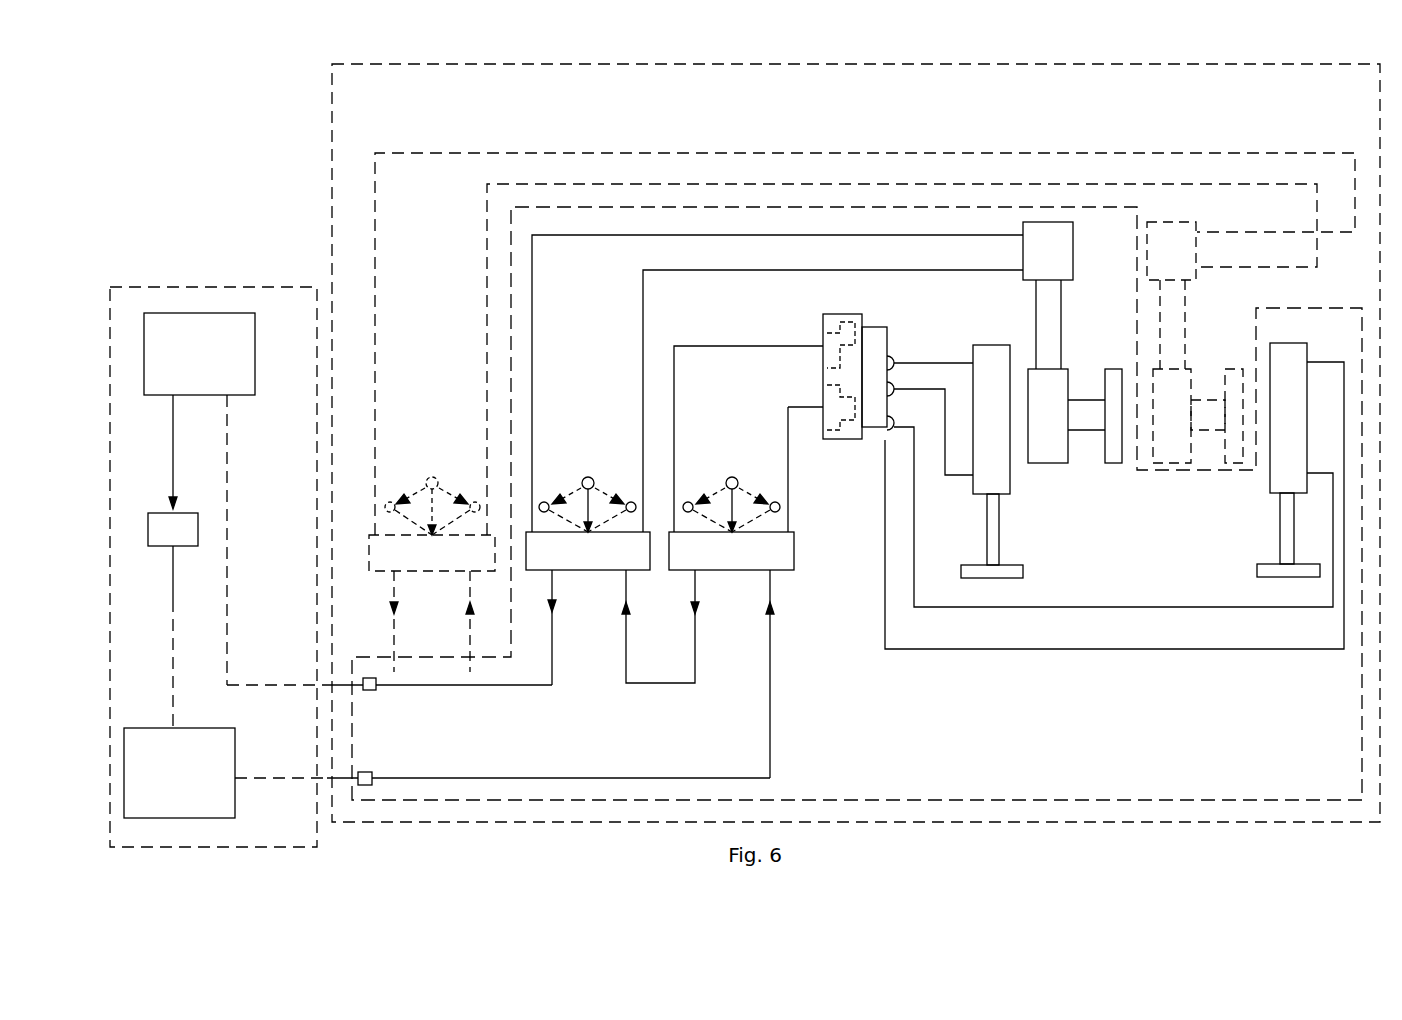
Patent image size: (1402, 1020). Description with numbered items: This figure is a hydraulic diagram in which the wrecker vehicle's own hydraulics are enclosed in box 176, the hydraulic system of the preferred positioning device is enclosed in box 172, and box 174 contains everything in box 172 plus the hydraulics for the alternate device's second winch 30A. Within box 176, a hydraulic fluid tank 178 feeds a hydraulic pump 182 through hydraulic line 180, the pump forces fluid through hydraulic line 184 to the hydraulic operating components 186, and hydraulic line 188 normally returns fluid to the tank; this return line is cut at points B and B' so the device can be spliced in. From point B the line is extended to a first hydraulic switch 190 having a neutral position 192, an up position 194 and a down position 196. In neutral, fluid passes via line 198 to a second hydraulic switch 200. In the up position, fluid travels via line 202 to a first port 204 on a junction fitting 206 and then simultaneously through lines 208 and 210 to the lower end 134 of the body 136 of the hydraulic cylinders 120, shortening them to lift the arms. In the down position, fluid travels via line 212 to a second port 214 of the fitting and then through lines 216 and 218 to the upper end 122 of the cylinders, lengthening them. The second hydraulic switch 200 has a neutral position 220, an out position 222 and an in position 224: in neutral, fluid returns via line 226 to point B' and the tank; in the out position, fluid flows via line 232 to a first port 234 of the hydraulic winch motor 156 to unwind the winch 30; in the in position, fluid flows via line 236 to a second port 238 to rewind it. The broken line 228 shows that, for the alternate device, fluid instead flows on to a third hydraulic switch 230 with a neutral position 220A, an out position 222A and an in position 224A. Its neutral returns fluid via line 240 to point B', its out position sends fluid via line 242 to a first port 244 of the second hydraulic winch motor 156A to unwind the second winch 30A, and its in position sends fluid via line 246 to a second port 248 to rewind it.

The box 174 is at (905, 64).
The box 172 is at (1000, 798).
The box 176 is at (200, 287).
The hydraulic fluid tank 178 is at (233, 365).
The hydraulic line 180 is at (170, 455).
The hydraulic pump 182 is at (148, 537).
The hydraulic line 184 is at (172, 652).
The hydraulic operating components 186 is at (195, 728).
The hydraulic line 188 is at (228, 512).
The line 226 is at (450, 686).
The point B' is at (392, 701).
The point B is at (548, 760).
The line 246 is at (376, 238).
The line 242 is at (487, 287).
The third hydraulic switch 230 is at (447, 560).
The neutral position 220A is at (434, 478).
The in position 224A is at (390, 500).
The out position 222A is at (475, 500).
The broken line 228 is at (468, 627).
The line 240 is at (396, 650).
The second hydraulic switch 200 is at (592, 563).
The neutral position 220 is at (590, 478).
The in position 224 is at (544, 500).
The out position 222 is at (631, 500).
The first hydraulic switch 190 is at (735, 563).
The neutral position 192 is at (734, 478).
The down position 196 is at (688, 500).
The up position 194 is at (775, 500).
The line 198 is at (655, 690).
The line 236 is at (705, 236).
The line 232 is at (798, 270).
The hydraulic winch motor 156 is at (1050, 240).
The second port 238 is at (1022, 235).
The first port 234 is at (1022, 275).
The winch 30 is at (1097, 410).
The second hydraulic winch motor 156A is at (1180, 232).
The second port 248 is at (1198, 237).
The first port 244 is at (1198, 270).
The second winch 30A is at (1220, 408).
The line 212 is at (745, 345).
The first port 204 is at (823, 412).
The second port 214 is at (822, 343).
The line 218 is at (935, 360).
The junction fitting 206 is at (815, 395).
The line 202 is at (790, 475).
The upper end 122 is at (1000, 350).
The line 210 is at (945, 443).
The line 208 is at (1040, 606).
The line 216 is at (1000, 649).
The hydraulic cylinders 120 is at (1010, 477).
The body 136 is at (1002, 443).
The lower end 134 is at (1003, 487).